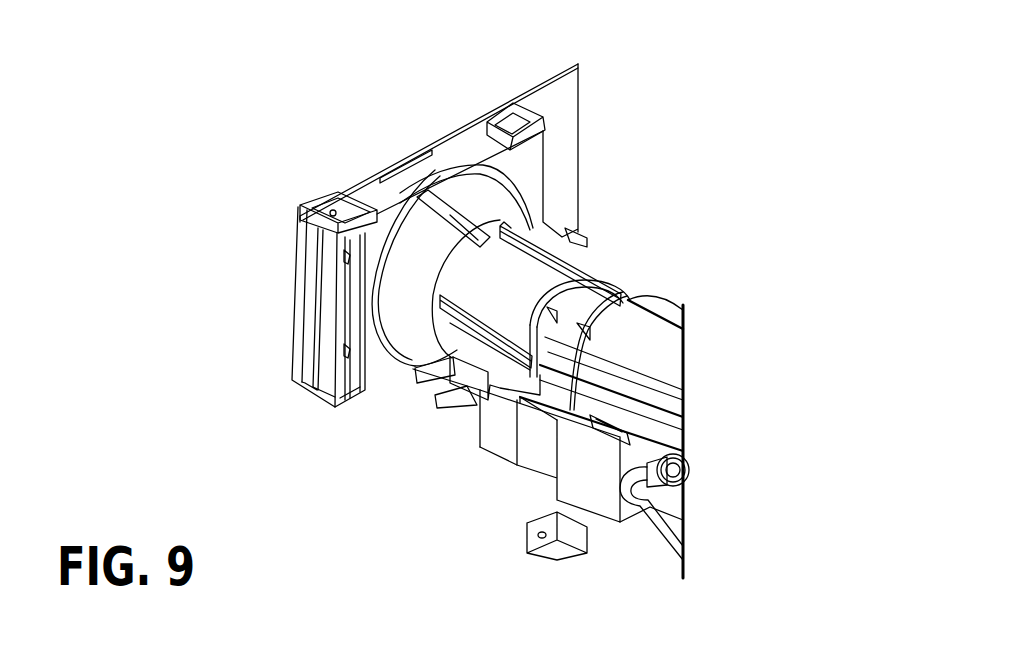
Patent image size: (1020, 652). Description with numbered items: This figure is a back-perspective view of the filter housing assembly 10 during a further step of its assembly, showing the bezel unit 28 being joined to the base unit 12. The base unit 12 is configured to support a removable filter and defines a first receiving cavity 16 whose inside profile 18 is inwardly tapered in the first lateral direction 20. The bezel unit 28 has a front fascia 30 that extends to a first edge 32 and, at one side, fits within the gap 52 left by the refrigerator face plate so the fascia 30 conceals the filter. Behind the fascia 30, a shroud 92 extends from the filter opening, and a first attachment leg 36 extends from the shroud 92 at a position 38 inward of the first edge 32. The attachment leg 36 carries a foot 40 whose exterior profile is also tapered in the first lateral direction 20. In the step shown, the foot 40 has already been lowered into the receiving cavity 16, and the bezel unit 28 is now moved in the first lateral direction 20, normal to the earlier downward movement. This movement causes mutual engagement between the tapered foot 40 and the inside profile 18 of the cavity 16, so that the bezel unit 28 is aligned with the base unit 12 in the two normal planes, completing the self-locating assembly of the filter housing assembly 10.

The filter housing assembly 10 is at (683, 197).
The base unit 12 is at (533, 470).
The first receiving cavity 16 is at (460, 414).
The inside profile 18 is at (450, 392).
The first lateral direction 20 is at (372, 437).
The bezel unit 28 is at (447, 116).
The front fascia 30 is at (563, 128).
The first edge 32 is at (295, 310).
The first attachment leg 36 is at (457, 352).
The position 38 is at (583, 314).
The foot 40 is at (583, 313).
The gap 52 is at (655, 357).
The shroud 92 is at (517, 268).